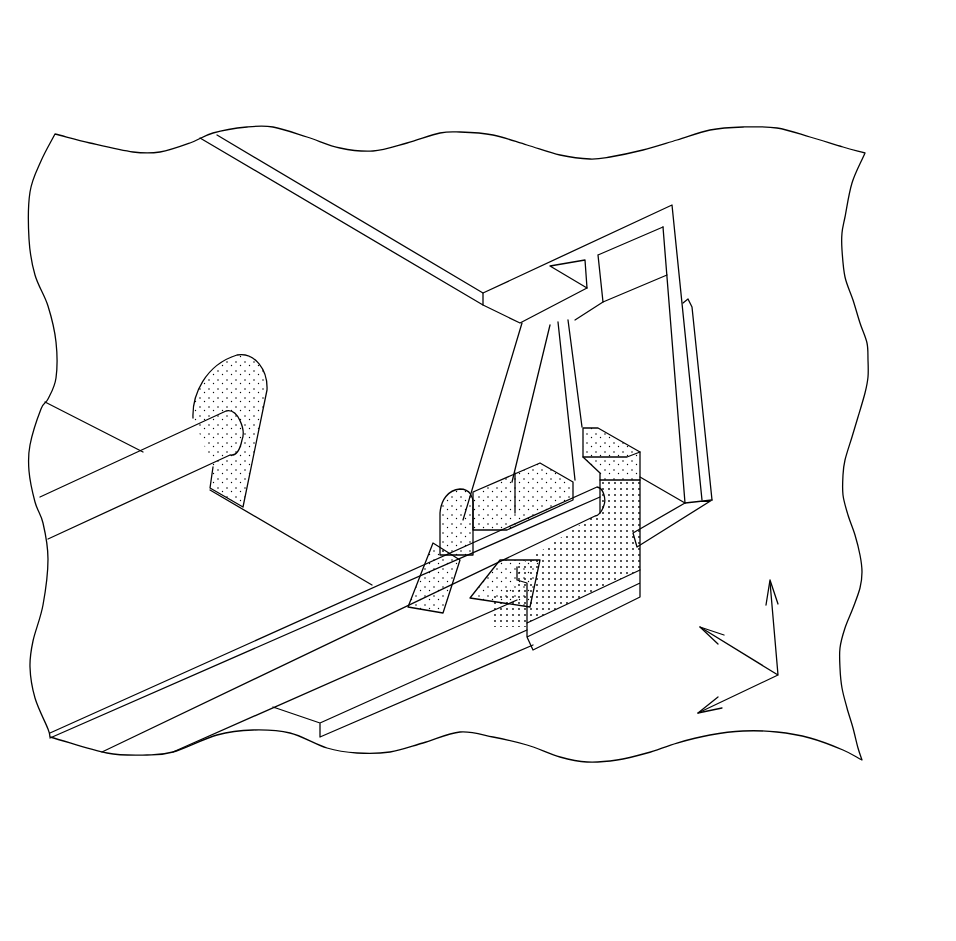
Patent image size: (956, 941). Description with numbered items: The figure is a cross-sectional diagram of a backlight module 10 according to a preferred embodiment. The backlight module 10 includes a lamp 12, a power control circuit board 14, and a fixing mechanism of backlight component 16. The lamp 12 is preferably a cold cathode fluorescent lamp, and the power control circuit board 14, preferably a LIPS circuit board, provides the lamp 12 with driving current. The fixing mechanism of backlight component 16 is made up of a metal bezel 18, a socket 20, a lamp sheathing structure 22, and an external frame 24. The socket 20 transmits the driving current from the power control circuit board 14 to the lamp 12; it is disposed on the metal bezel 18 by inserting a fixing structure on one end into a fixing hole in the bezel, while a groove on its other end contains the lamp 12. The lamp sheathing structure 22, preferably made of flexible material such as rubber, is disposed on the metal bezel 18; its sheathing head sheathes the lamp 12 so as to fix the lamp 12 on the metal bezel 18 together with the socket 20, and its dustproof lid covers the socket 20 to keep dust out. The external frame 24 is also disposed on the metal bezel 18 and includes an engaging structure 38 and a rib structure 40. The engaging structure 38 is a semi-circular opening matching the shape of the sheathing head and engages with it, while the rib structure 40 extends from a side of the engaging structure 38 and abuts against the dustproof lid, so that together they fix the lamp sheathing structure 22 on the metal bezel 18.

The backlight module 10 is at (352, 100).
The lamp 12 is at (248, 655).
The power control circuit board 14 is at (452, 670).
The fixing mechanism of backlight component 16 is at (782, 510).
The metal bezel 18 is at (707, 472).
The socket 20 is at (617, 560).
The lamp sheathing structure 22 is at (603, 450).
The external frame 24 is at (730, 267).
The engaging structure 38 is at (460, 482).
The rib structure 40 is at (568, 383).